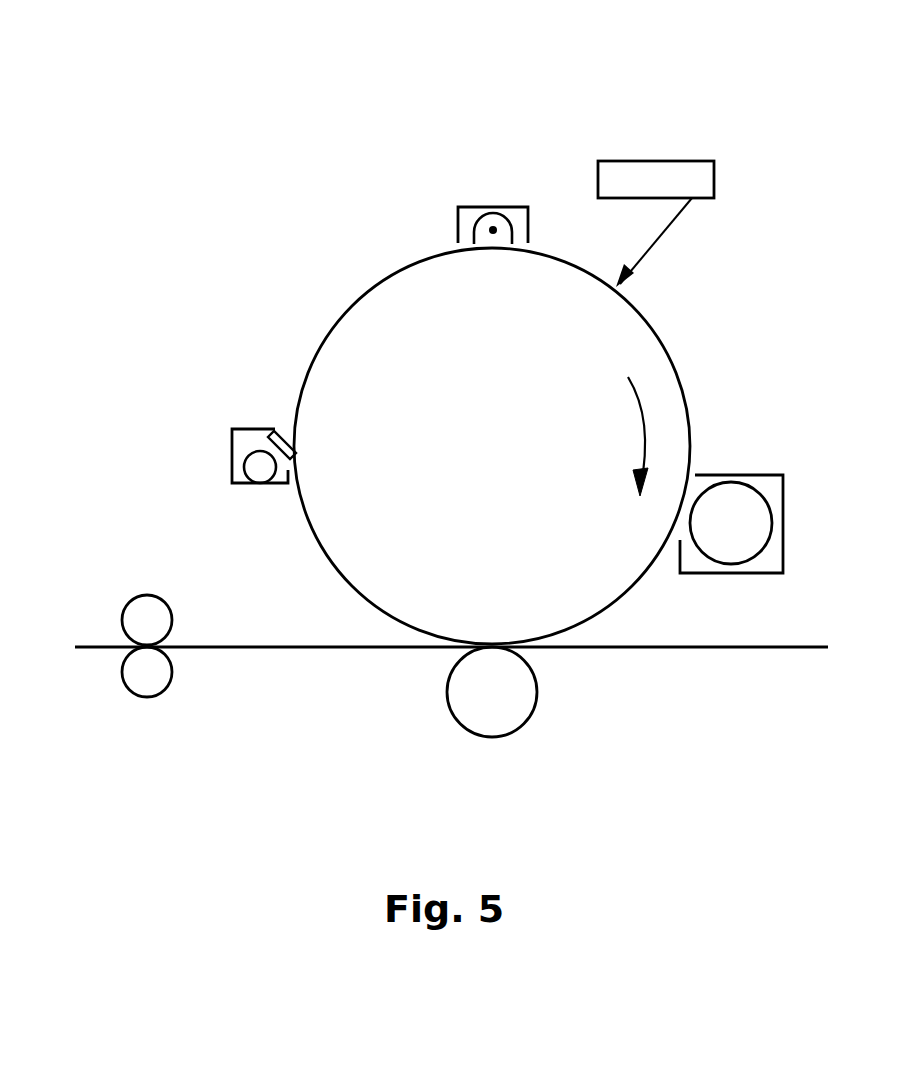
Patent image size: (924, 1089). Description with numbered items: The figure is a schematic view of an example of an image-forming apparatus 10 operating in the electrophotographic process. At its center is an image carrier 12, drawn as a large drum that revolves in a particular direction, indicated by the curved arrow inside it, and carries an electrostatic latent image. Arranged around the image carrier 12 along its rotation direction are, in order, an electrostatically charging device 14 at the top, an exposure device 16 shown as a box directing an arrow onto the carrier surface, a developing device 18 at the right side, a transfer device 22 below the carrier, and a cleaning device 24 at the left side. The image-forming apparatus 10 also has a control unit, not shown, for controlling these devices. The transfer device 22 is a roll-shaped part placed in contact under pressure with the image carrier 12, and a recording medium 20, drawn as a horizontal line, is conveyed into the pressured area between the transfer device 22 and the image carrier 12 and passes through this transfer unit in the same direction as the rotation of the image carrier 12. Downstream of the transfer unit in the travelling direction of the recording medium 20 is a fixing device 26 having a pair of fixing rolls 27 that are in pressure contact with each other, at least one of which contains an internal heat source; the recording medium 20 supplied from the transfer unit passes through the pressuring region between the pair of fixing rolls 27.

The image-forming apparatus 10 is at (732, 67).
The image carrier 12 is at (665, 342).
The electrostatically charging device 14 is at (497, 207).
The exposure device 16 is at (658, 161).
The developing device 18 is at (748, 475).
The recording medium 20 is at (730, 650).
The transfer device 22 is at (480, 738).
The cleaning device 24 is at (232, 459).
The fixing device 26 is at (151, 714).
The fixing rolls 27 is at (172, 612).